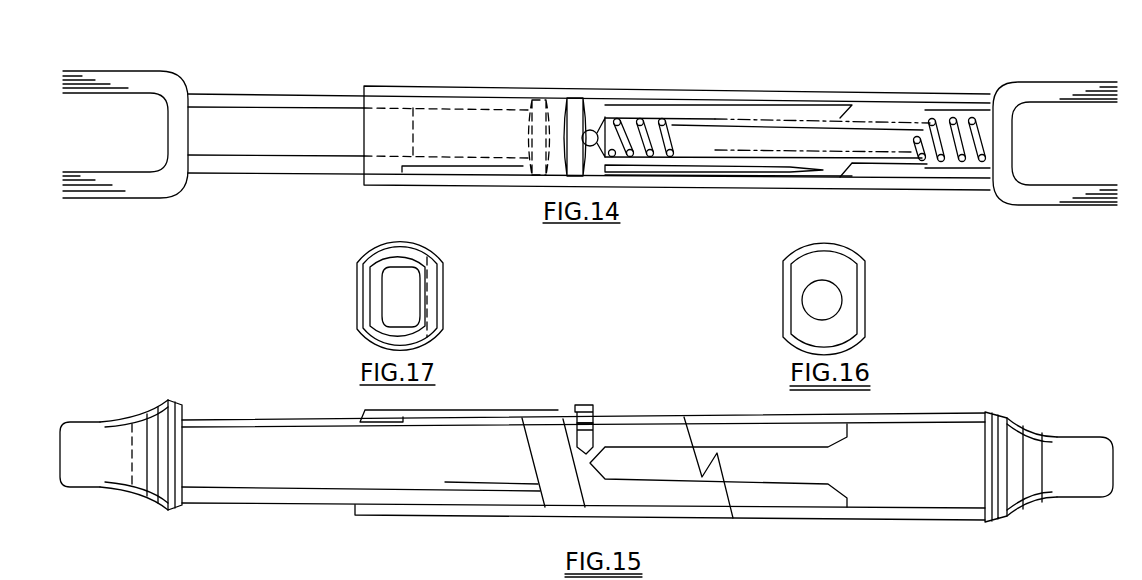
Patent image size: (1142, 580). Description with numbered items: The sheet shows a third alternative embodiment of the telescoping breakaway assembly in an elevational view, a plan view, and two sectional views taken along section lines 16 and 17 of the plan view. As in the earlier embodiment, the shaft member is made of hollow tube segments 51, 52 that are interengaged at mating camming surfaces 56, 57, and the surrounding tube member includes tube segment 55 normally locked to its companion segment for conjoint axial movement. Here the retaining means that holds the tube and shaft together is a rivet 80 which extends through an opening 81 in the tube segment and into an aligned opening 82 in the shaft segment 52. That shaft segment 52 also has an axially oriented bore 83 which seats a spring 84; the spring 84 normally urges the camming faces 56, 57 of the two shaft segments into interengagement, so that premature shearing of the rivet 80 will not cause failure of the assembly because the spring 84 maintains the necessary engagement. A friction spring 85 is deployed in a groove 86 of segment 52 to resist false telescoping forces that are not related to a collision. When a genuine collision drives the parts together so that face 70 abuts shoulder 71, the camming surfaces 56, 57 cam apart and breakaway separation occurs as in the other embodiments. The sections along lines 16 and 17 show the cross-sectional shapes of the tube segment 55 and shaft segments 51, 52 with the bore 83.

In FIG. 17, the shaft segment 51 is at (425, 248).
In FIG. 17, the shaft segment 52 is at (412, 332).
In FIG. 16, the shaft segment 52 is at (843, 270).
In FIG. 15, the shaft segment 52 is at (288, 468).
In FIG. 16, the tube segment 55 is at (842, 243).
In FIG. 14, the camming surface 56 is at (538, 103).
In FIG. 15, the camming surface 56 is at (527, 417).
In FIG. 14, the camming surface 57 is at (577, 100).
In FIG. 15, the camming surface 57 is at (556, 430).
In FIG. 15, the face 70 is at (360, 411).
In FIG. 15, the shoulder 71 is at (182, 403).
In FIG. 15, the rivet 80 is at (593, 410).
In FIG. 15, the opening 81 is at (578, 406).
In FIG. 15, the opening 82 is at (596, 442).
In FIG. 16, the bore 83 is at (835, 305).
In FIG. 15, the bore 83 is at (746, 450).
In FIG. 14, the spring 84 is at (922, 160).
In FIG. 14, the friction spring 85 is at (735, 180).
In FIG. 14, the groove 86 is at (788, 173).
In FIG. 15, the section line 16 is at (836, 399).
In FIG. 15, the section line 17 is at (388, 395).